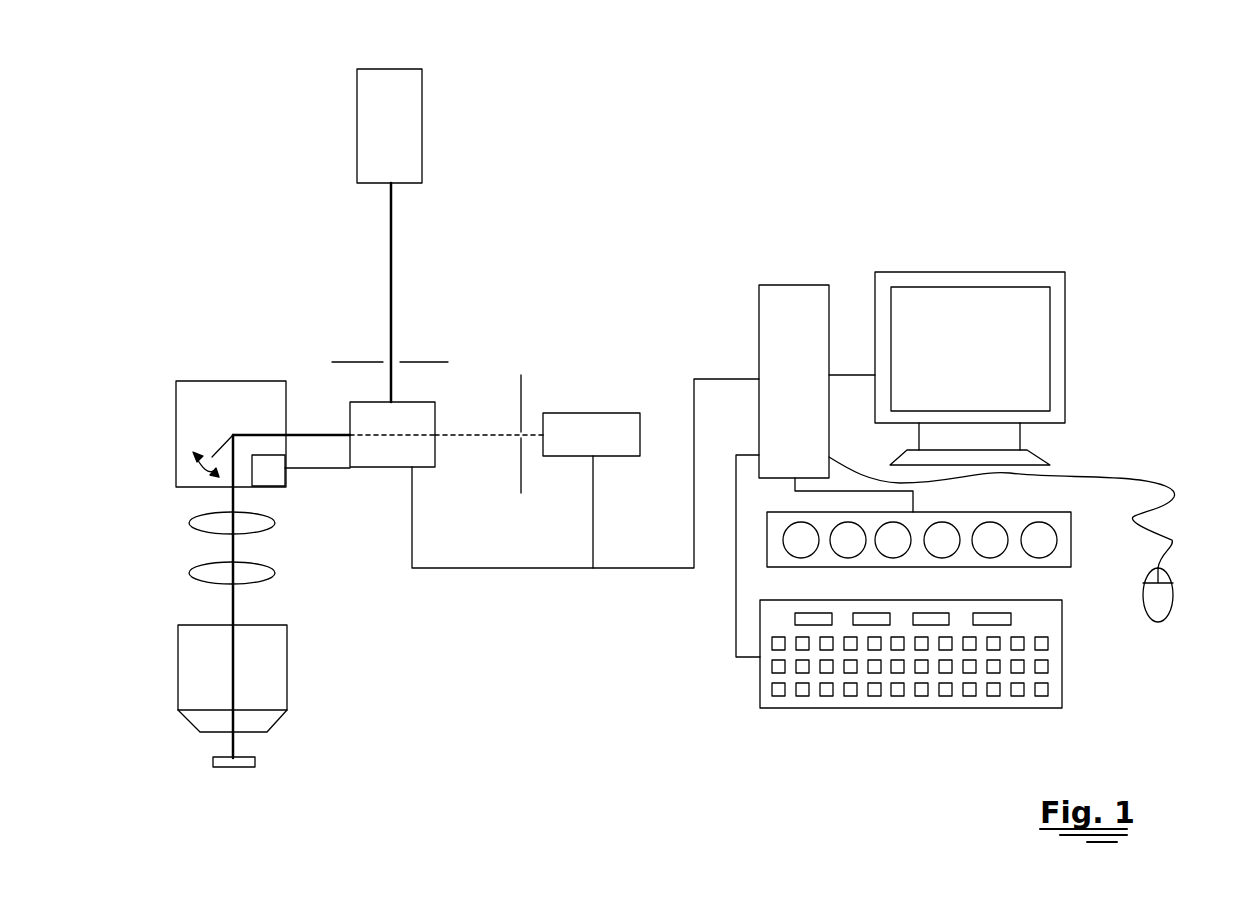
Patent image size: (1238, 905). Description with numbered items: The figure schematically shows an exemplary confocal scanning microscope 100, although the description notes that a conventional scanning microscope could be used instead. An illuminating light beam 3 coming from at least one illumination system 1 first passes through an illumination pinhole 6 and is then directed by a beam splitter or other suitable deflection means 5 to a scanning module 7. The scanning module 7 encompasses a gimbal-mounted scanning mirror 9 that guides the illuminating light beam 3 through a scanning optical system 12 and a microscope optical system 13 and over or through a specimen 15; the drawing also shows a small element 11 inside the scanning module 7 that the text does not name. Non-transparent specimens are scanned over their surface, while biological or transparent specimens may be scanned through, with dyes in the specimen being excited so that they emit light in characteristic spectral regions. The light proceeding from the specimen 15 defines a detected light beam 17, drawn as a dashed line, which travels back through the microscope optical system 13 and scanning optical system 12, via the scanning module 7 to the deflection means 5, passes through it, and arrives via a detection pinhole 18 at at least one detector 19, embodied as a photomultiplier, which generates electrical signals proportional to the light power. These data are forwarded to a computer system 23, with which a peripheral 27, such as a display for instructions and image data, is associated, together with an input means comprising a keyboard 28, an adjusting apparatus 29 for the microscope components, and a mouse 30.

The illumination system 1 is at (410, 108).
The illuminating light beam 3 is at (391, 215).
The confocal scanning microscope 100 is at (456, 320).
The illumination pinhole 6 is at (349, 363).
The scanning module 7 is at (201, 381).
The scanning mirror 9 is at (222, 447).
The scan lens 11 is at (272, 473).
The deflection means 5 is at (413, 463).
The detected light beam 17 is at (443, 433).
The detection pinhole 18 is at (522, 396).
The detector 19 is at (562, 428).
The computer system 23 is at (768, 324).
The peripheral 27 is at (938, 308).
The adjusting apparatus 29 is at (970, 517).
The keyboard 28 is at (1040, 620).
The mouse 30 is at (1153, 598).
The scanning optical system 12 is at (210, 523).
The microscope optical system 13 is at (187, 648).
The specimen 15 is at (215, 751).